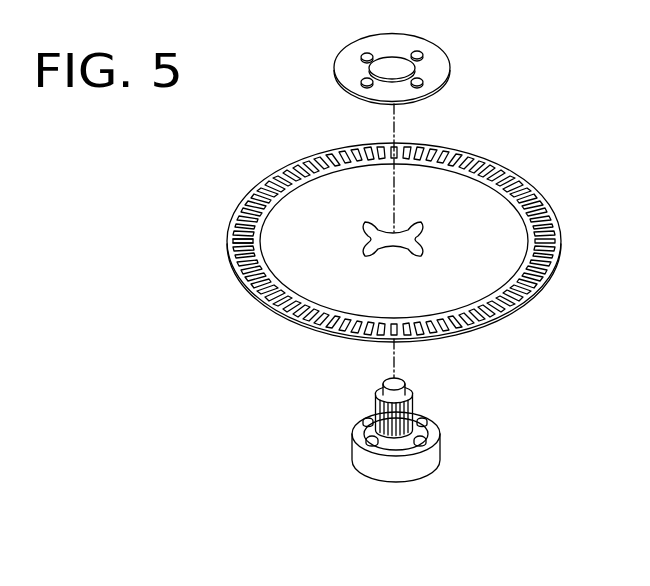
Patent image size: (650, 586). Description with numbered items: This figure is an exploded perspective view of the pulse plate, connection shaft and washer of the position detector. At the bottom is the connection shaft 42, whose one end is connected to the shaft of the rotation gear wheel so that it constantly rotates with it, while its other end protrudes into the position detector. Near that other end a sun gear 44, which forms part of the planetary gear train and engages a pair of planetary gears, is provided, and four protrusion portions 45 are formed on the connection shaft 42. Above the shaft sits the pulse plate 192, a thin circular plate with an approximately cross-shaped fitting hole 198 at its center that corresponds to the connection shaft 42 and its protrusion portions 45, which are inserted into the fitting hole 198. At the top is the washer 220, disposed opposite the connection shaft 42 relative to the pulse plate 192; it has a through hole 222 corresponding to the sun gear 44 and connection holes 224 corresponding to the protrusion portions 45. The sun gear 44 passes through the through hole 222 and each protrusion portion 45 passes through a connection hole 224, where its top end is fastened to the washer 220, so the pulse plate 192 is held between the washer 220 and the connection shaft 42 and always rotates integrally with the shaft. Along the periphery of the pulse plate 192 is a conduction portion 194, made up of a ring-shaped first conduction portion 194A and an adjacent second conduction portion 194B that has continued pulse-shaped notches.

The connection shaft 42 is at (441, 452).
The sun gear 44 is at (415, 402).
The protrusion portions 45 is at (437, 436).
The pulse plate 192 is at (319, 232).
The conduction portion 194 is at (311, 241).
The first conduction portion 194A is at (232, 228).
The second conduction portion 194B is at (233, 272).
The fitting hole 198 is at (407, 251).
The washer 220 is at (448, 58).
The through hole 222 is at (417, 70).
The connection holes 224 is at (364, 53).